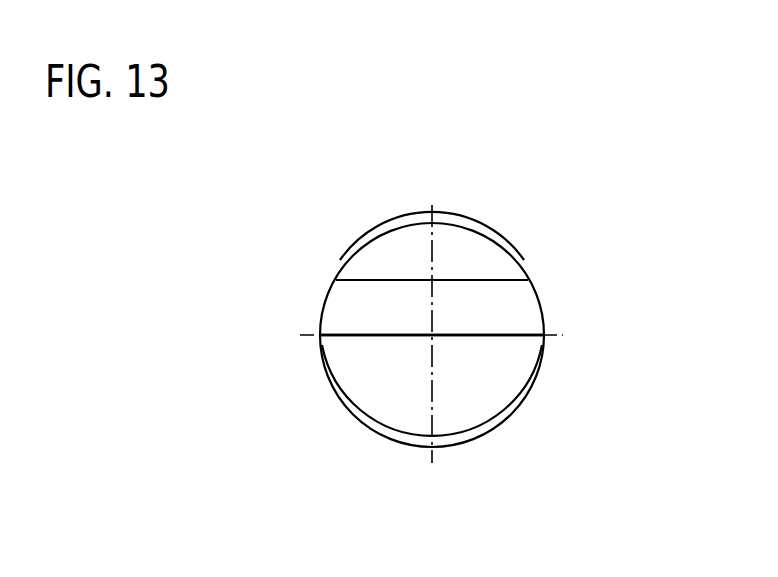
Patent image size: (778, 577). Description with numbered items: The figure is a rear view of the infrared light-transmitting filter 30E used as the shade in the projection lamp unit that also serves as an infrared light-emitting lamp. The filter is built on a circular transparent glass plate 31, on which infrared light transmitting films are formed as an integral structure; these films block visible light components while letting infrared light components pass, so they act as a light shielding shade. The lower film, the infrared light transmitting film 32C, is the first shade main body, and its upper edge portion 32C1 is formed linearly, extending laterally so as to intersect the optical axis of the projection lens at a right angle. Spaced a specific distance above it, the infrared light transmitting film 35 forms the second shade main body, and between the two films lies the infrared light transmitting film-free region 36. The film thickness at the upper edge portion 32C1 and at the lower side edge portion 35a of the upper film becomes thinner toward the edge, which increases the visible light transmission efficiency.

The infrared light-transmitting filter 30E is at (348, 246).
The circular transparent glass plate 31 is at (389, 230).
The infrared light transmitting film 35 is at (457, 240).
The lower side edge portion 35a is at (477, 279).
The upper edge portion 32C1 is at (518, 333).
The infrared light transmitting film-free region 36 is at (363, 306).
The infrared light transmitting film 32C is at (502, 400).